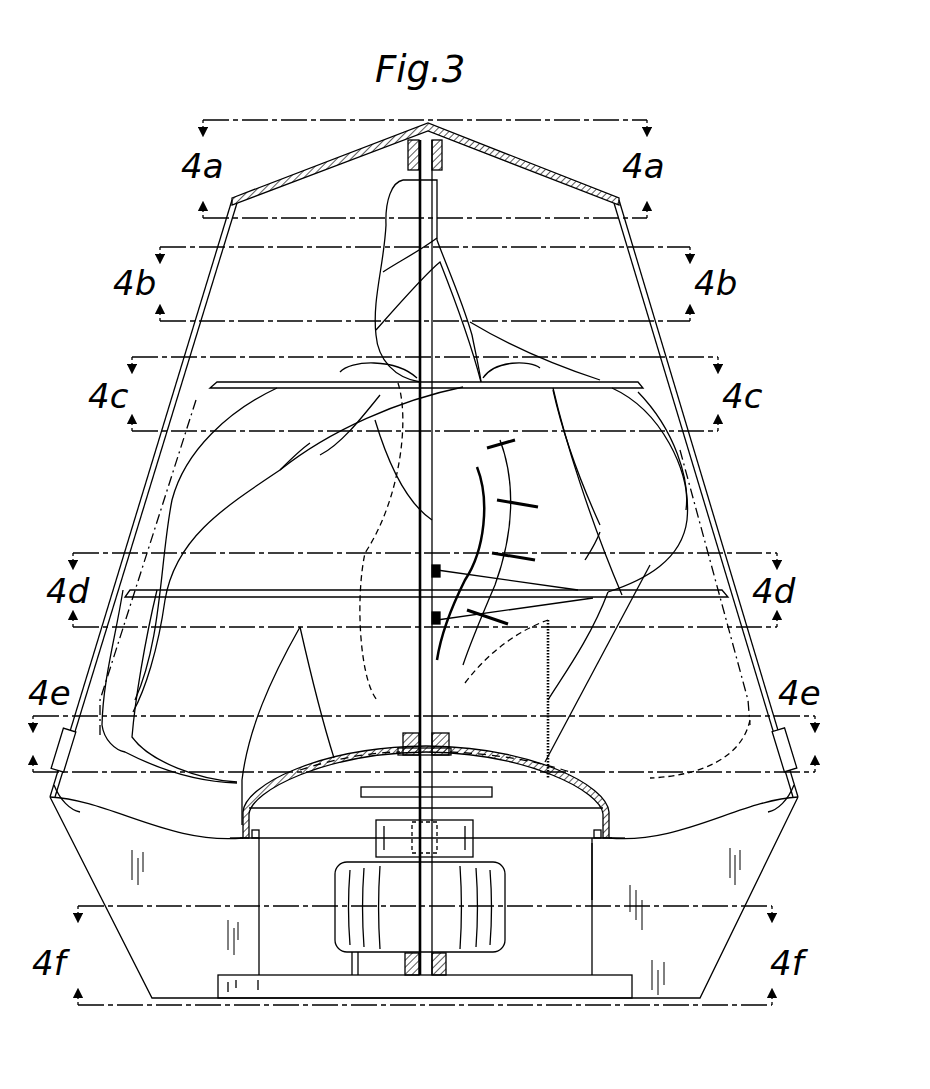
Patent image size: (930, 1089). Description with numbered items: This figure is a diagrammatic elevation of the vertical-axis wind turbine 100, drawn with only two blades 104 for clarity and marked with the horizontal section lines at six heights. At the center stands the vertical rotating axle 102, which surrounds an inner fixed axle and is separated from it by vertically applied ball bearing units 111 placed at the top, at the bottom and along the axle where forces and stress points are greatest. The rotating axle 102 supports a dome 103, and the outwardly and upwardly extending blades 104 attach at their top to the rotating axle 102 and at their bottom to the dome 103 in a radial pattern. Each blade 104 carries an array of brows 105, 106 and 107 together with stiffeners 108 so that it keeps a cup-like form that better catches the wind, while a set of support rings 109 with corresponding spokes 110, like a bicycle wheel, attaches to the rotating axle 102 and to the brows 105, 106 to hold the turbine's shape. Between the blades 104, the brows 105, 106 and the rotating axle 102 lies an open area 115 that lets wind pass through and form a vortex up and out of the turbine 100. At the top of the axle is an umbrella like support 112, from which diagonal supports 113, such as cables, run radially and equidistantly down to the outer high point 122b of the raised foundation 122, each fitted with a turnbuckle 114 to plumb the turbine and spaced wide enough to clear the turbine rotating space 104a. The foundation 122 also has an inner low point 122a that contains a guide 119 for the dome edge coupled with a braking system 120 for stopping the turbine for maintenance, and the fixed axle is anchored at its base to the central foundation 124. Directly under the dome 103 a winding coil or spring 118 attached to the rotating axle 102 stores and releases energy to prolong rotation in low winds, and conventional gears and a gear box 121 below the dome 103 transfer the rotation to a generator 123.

The vertical-axis wind turbine 100 is at (144, 76).
The vertical rotating axle 102 is at (437, 270).
The dome 103 is at (576, 776).
The blades 104 is at (386, 271).
The turbine rotating space 104a is at (94, 686).
The brow 105 is at (506, 531).
The brow 106 is at (310, 444).
The brow 107 is at (298, 690).
The stiffeners 108 is at (522, 452).
The support rings 109 is at (252, 382).
The spokes 110 is at (538, 589).
The ball bearing units 111 is at (442, 164).
The umbrella like support 112 is at (546, 177).
The diagonal supports 113 is at (143, 486).
The turnbuckle 114 is at (71, 746).
The open area 115 is at (487, 516).
The winding coil or spring 118 is at (470, 794).
The guide 119 is at (604, 844).
The braking system 120 is at (600, 845).
The gears / gear box 121 is at (474, 851).
The foundation 122 is at (745, 852).
The inner low point 122a is at (242, 841).
The outer high point 122b is at (56, 788).
The generator 123 is at (505, 878).
The central foundation 124 is at (360, 1000).